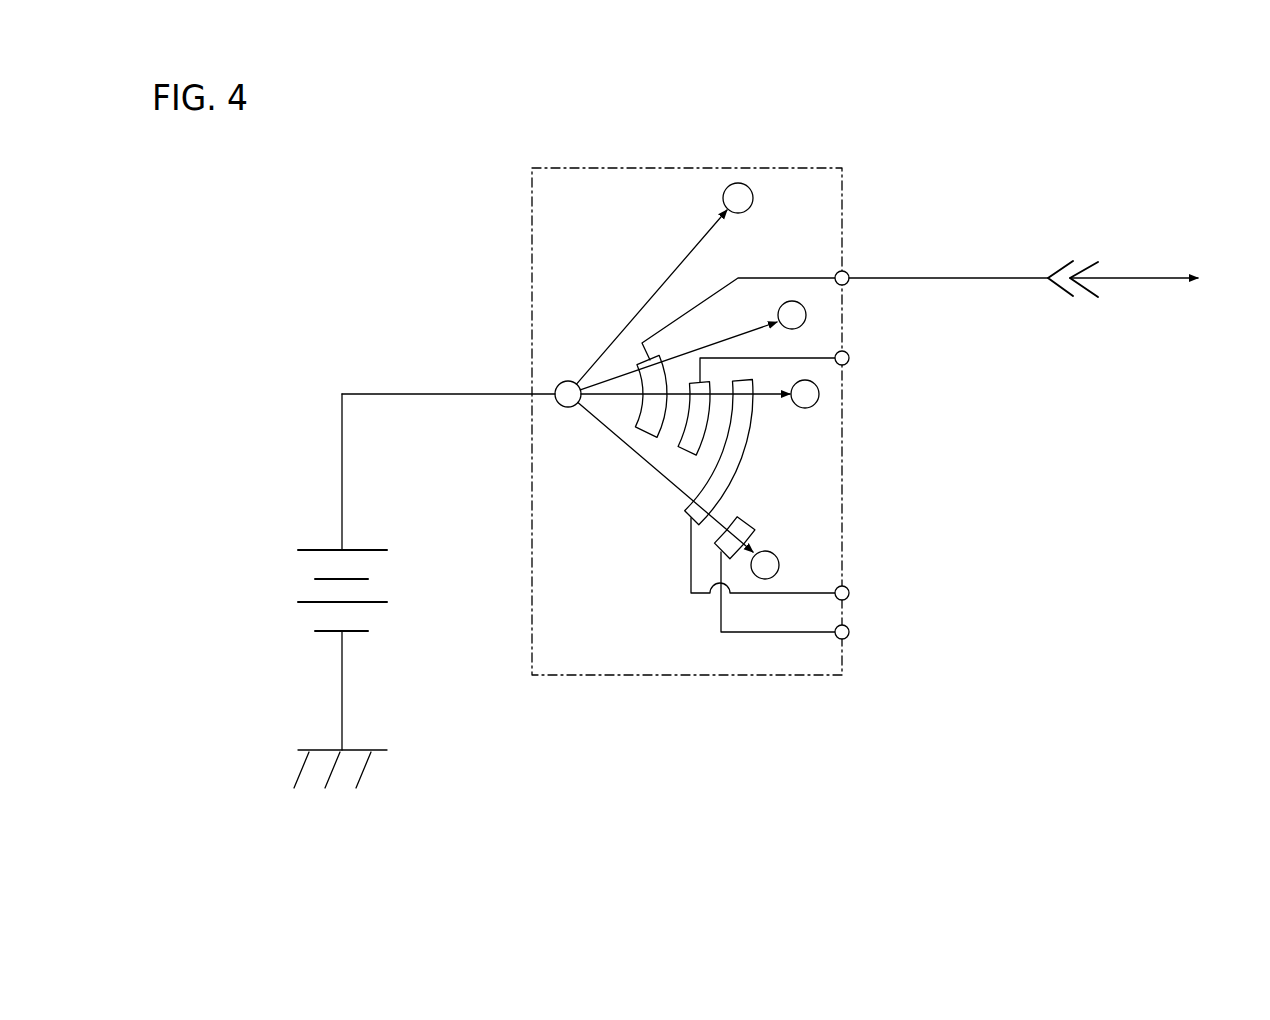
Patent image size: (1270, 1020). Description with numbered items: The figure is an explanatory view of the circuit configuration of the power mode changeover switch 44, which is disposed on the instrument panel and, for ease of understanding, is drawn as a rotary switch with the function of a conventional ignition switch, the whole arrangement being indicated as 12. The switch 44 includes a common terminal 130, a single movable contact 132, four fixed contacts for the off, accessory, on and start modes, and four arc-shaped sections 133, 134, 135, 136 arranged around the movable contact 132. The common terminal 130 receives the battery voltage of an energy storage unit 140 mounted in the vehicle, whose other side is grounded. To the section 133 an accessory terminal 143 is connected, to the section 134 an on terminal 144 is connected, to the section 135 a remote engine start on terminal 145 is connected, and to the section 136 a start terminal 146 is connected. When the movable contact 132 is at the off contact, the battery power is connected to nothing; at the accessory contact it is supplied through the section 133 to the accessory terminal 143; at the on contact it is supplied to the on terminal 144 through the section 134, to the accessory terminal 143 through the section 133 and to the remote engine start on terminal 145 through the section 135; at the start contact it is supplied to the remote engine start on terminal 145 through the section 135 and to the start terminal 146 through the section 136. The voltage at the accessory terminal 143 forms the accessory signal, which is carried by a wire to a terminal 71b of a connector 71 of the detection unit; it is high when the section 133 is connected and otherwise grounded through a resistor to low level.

The ignition switch 12 is at (454, 150).
The power mode changeover switch 44 is at (668, 167).
The connector 71 is at (1101, 231).
The terminal 71b is at (1078, 297).
The common terminal 130 is at (559, 385).
The movable contact 132 is at (597, 419).
The section 133 is at (638, 441).
The section 134 is at (686, 455).
The section 135 is at (684, 513).
The section 136 is at (716, 548).
The energy storage unit 140 is at (309, 564).
The ACC terminal 143 is at (847, 271).
The ON terminal 144 is at (848, 364).
The RESON terminal 145 is at (850, 593).
The START terminal 146 is at (850, 632).